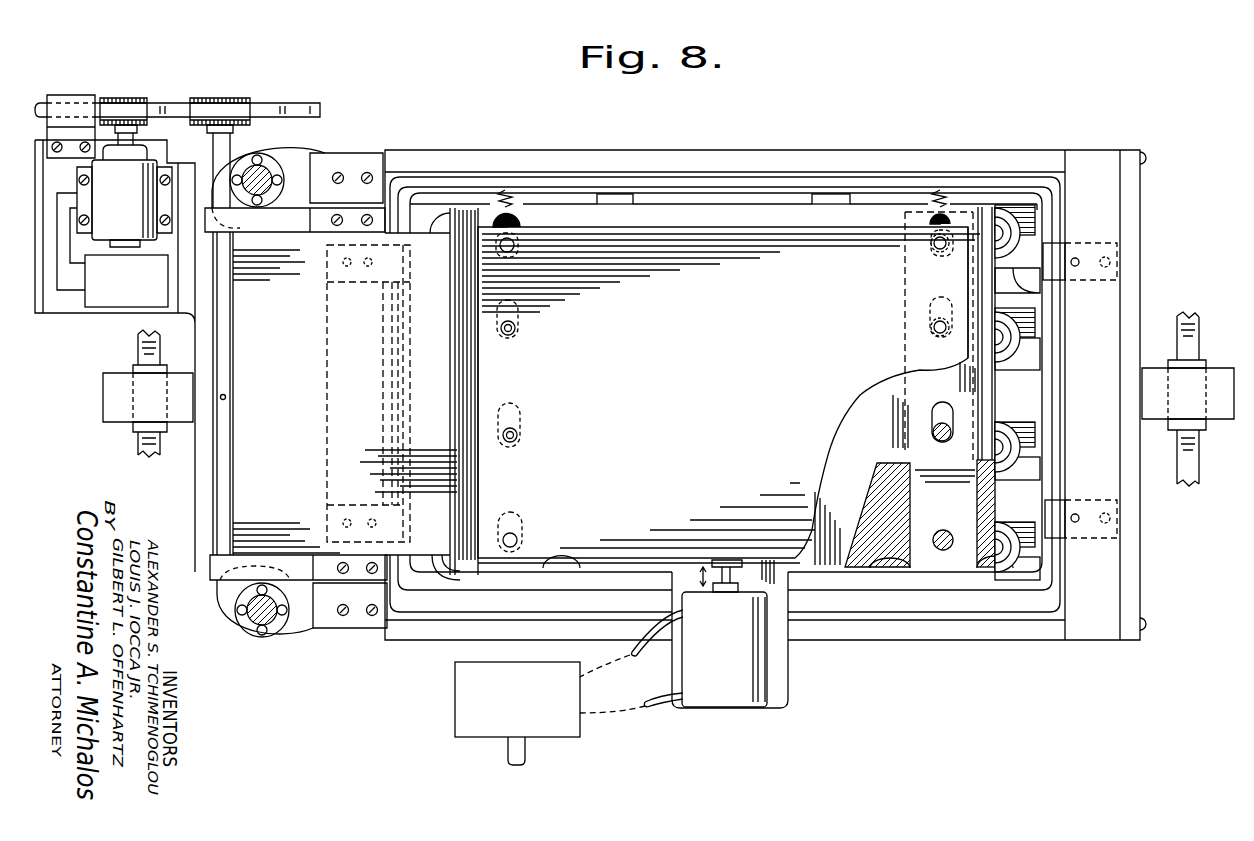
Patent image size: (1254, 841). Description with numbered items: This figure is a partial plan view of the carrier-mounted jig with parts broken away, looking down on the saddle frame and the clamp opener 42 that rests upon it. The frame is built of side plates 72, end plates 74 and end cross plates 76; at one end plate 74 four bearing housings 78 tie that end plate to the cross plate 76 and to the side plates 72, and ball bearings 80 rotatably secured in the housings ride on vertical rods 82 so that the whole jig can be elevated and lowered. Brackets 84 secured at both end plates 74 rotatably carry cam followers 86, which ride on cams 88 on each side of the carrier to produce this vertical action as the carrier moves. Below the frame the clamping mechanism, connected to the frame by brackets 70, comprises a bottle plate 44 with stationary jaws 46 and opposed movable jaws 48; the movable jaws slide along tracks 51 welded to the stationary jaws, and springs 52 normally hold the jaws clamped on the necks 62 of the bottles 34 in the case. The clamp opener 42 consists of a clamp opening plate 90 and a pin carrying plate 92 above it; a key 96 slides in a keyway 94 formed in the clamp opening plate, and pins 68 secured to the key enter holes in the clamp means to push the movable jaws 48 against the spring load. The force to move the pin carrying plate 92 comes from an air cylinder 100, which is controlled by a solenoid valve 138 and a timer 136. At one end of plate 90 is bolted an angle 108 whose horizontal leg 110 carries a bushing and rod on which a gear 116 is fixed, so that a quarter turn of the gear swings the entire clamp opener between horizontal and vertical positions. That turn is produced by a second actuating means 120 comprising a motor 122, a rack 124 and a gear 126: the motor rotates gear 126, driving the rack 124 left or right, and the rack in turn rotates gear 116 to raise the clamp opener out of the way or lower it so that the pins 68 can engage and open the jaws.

The bottles 34 is at (700, 178).
The clamp opener 42 is at (838, 240).
The bottle plate 44 is at (782, 204).
The stationary jaws 46 is at (1020, 275).
The movable jaws 48 is at (1030, 224).
The tracks 51 is at (607, 194).
The springs 52 is at (503, 190).
The necks 62 is at (997, 240).
The pins 68 is at (517, 430).
The brackets 70 is at (327, 284).
The side plates 72 is at (460, 157).
The end plates 74 is at (200, 548).
The end cross plates 76 is at (340, 343).
The bearing housings 78 is at (320, 158).
The ball bearings 80 is at (258, 156).
The vertical rods 82 is at (262, 196).
The brackets 84 is at (107, 397).
The cam followers 86 is at (138, 362).
The cams 88 is at (143, 450).
The clamp opening plate 90 is at (743, 214).
The pin carrying plate 92 is at (655, 380).
The keyway 94 is at (966, 507).
The key 96 is at (905, 490).
The air cylinder 100 is at (732, 658).
The angle 108 is at (265, 440).
The horizontal leg 110 is at (278, 390).
The gear 116 is at (222, 98).
The second actuating means 120 is at (86, 93).
The motor 122 is at (130, 210).
The rack 124 is at (272, 103).
The gear 126 is at (130, 98).
The timer 136 is at (112, 250).
The solenoid valve 138 is at (465, 718).